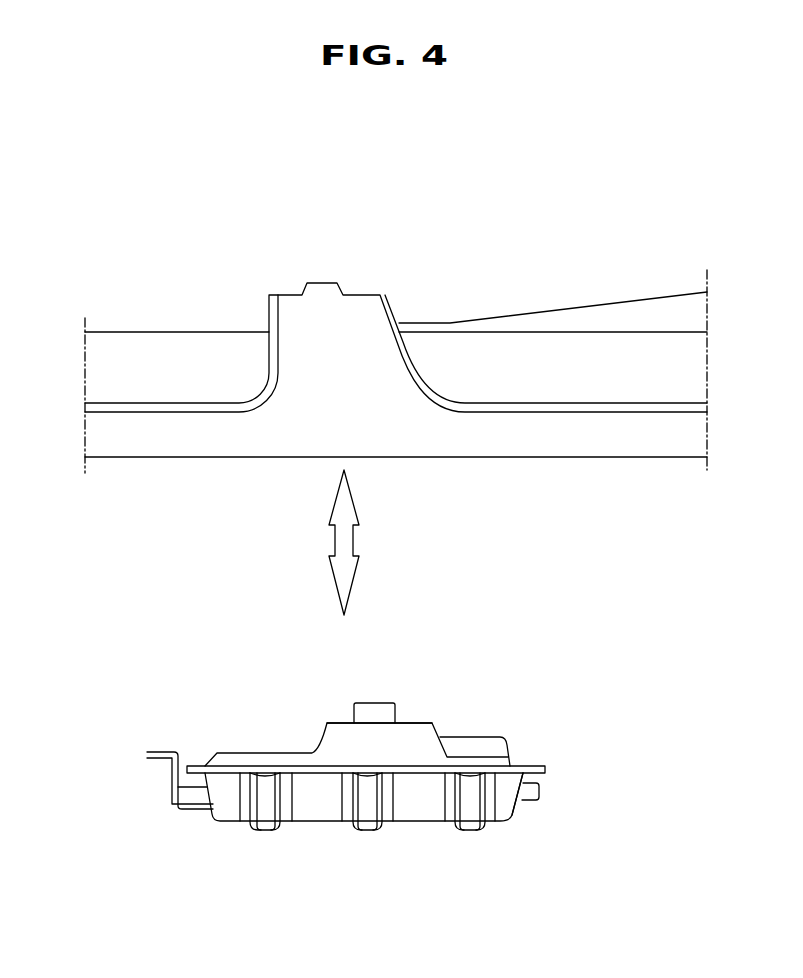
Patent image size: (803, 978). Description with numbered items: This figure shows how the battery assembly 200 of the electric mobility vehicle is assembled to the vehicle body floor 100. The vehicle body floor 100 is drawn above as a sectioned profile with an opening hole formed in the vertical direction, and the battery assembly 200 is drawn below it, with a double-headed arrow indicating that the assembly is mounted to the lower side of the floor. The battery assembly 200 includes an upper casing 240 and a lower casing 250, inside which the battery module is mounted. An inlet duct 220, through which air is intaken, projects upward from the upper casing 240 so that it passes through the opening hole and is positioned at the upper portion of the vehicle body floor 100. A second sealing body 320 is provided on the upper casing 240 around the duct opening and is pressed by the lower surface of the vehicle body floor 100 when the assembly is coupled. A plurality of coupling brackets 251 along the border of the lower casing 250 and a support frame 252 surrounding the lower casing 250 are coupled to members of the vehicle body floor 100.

The vehicle body floor 100 is at (447, 297).
The battery assembly 200 is at (198, 825).
The inlet duct 220 is at (397, 706).
The upper casing 240 is at (500, 745).
The lower casing 250 is at (511, 815).
The coupling brackets 251 is at (157, 750).
The support frame 252 is at (467, 820).
The second sealing body 320 is at (402, 713).